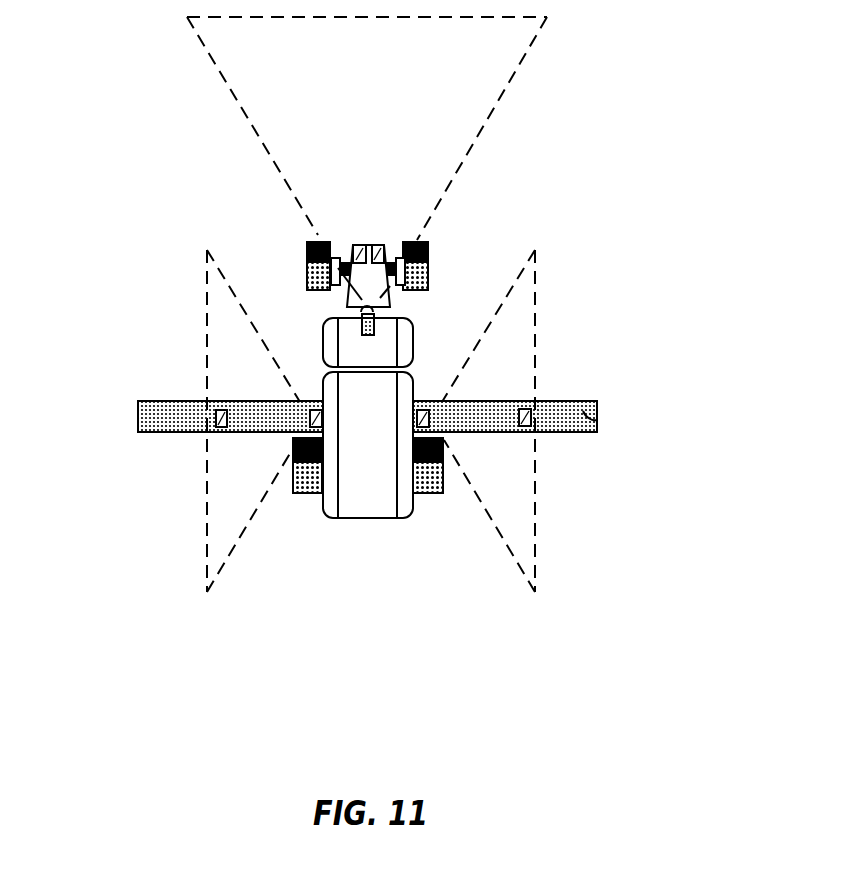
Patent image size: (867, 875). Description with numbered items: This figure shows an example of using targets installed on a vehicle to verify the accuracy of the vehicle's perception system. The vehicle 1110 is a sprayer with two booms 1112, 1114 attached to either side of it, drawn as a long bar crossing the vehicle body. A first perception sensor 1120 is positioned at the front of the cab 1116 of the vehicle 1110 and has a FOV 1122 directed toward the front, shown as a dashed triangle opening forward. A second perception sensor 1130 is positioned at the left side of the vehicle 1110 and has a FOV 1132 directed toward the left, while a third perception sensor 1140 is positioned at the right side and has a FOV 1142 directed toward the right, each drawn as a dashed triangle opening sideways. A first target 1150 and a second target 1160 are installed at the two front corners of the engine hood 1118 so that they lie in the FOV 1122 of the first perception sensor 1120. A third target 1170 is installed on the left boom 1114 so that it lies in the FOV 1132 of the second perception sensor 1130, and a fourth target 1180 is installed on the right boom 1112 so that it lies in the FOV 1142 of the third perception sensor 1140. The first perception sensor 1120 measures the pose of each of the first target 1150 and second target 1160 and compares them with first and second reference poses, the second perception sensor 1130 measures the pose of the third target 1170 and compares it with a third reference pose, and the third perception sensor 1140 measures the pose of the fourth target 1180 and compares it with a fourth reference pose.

The vehicle 1110 is at (359, 399).
The boom 1112 is at (598, 428).
The boom 1114 is at (148, 422).
The cab 1116 is at (369, 347).
The engine hood 1118 is at (372, 290).
The first perception sensor 1120 is at (345, 327).
The FOV 1122 is at (450, 130).
The second perception sensor 1130 is at (317, 410).
The FOV 1132 is at (215, 542).
The third perception sensor 1140 is at (428, 425).
The FOV 1142 is at (503, 370).
The first target 1150 is at (360, 245).
The second target 1160 is at (381, 245).
The third target 1170 is at (215, 408).
The fourth target 1180 is at (534, 432).